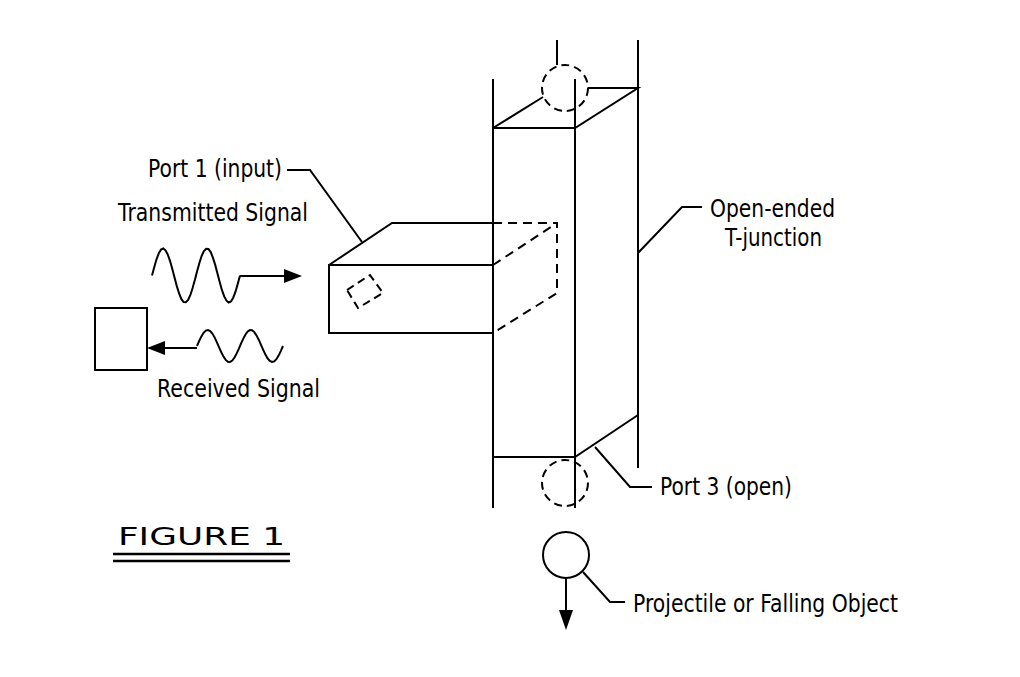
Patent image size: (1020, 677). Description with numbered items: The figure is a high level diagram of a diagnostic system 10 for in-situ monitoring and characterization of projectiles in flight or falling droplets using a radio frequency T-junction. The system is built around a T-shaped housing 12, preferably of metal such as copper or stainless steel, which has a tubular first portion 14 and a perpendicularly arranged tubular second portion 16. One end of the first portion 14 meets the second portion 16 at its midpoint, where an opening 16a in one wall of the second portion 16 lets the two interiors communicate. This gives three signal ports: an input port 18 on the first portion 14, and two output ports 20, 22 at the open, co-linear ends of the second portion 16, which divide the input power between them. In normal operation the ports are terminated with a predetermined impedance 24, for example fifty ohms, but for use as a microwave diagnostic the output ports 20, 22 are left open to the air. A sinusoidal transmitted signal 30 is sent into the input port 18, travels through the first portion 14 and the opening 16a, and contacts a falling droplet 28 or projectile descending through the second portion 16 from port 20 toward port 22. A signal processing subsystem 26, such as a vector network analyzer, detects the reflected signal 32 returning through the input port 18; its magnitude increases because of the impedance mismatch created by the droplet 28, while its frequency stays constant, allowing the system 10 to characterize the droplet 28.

The diagnostic system 10 is at (372, 114).
The T-shaped housing 12 is at (615, 148).
The tubular first portion 14 is at (432, 300).
The tubular second portion 16 is at (618, 335).
The opening 16a is at (527, 313).
The input port 18 is at (451, 238).
The output port 20 is at (613, 88).
The output port 22 is at (518, 458).
The predetermined impedance 24 is at (493, 100).
The signal processing subsystem 26 is at (95, 339).
The falling droplet 28 is at (550, 72).
The transmitted signal 30 is at (218, 267).
The reflected signal 32 is at (218, 343).